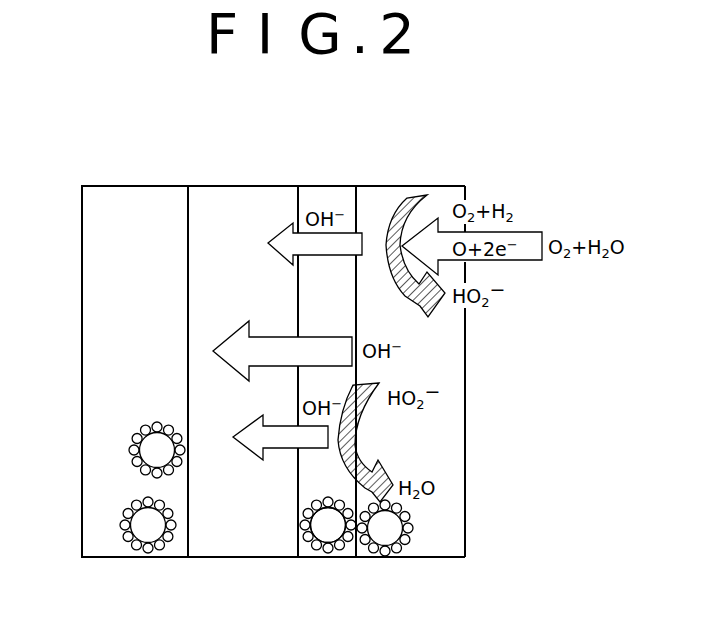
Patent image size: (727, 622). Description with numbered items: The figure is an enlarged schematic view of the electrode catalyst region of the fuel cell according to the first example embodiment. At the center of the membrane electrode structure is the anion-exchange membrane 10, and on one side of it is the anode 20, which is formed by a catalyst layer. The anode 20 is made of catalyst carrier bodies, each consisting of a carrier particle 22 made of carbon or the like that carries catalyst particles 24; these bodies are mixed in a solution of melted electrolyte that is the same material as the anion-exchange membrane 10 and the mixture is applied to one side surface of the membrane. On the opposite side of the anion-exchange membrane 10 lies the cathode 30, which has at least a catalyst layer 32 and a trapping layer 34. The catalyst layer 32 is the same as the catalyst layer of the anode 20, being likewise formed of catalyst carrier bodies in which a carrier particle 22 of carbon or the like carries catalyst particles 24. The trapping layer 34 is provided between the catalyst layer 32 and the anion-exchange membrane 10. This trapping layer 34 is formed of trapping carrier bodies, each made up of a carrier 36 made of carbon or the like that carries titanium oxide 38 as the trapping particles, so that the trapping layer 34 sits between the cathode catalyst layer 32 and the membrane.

The anion-exchange membrane 10 is at (239, 195).
The anode 20 is at (141, 195).
The cathode 30 is at (470, 128).
The catalyst layer 32 is at (436, 195).
The trapping layer 34 is at (327, 195).
The carrier particle 22 is at (150, 514).
The catalyst particles 24 is at (126, 534).
The carrier 36 is at (330, 528).
The titanium oxide 38 is at (316, 547).